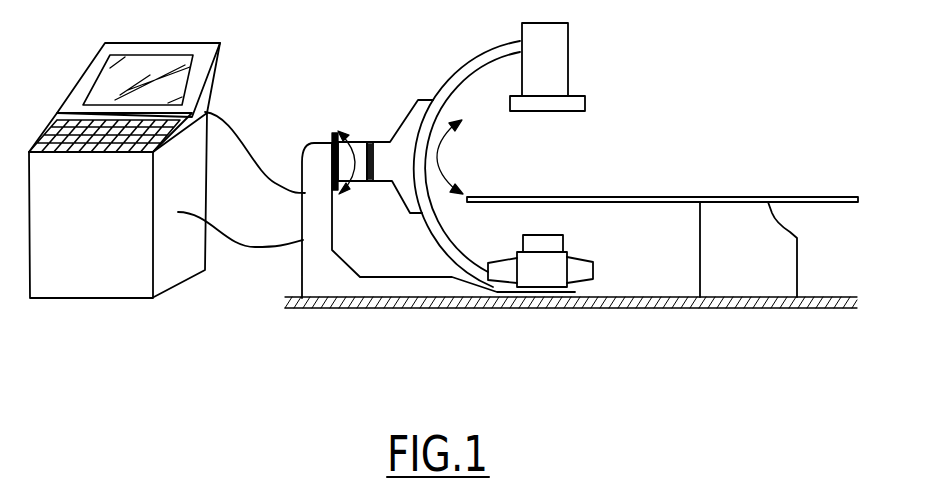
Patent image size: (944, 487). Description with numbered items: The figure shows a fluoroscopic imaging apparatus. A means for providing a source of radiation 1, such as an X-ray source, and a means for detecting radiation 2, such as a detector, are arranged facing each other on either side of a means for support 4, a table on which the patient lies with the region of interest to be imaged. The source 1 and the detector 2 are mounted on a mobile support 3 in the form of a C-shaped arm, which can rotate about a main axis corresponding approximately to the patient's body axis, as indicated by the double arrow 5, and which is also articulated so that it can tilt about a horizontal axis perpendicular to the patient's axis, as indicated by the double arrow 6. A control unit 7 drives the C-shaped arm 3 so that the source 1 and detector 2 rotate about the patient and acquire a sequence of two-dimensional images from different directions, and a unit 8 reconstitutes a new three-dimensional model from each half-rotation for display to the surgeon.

The means for providing a source of radiation 1 is at (557, 58).
The means for detecting radiation 2 is at (557, 263).
The mobile support 3 is at (442, 82).
The means for support 4 is at (658, 195).
The double arrow 5 is at (355, 137).
The double arrow 6 is at (438, 134).
The control unit 7 is at (103, 236).
The unit 8 is at (220, 78).